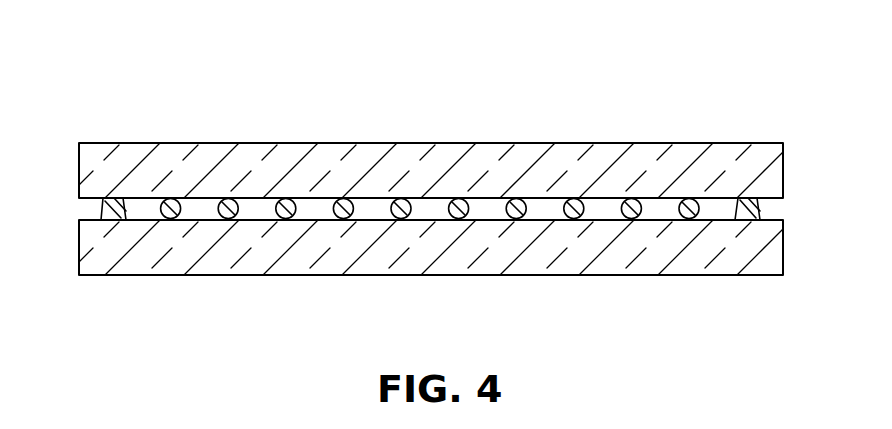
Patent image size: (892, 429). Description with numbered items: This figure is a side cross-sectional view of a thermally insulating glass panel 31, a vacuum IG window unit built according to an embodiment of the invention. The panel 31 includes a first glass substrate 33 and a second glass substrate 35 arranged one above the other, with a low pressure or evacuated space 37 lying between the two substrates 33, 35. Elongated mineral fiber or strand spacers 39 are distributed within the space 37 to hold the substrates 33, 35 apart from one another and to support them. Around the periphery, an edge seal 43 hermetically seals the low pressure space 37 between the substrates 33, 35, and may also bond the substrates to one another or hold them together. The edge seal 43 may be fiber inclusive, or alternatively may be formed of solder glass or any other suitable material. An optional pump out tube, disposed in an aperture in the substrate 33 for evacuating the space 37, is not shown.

The thermally insulating glass panel 31 is at (210, 111).
The first glass substrate 33 is at (612, 260).
The second glass substrate 35 is at (645, 160).
The low pressure or evacuated space 37 is at (540, 208).
The elongated mineral fiber or strand spacers 39 is at (390, 198).
The peripheral or edge seal 43 is at (102, 210).